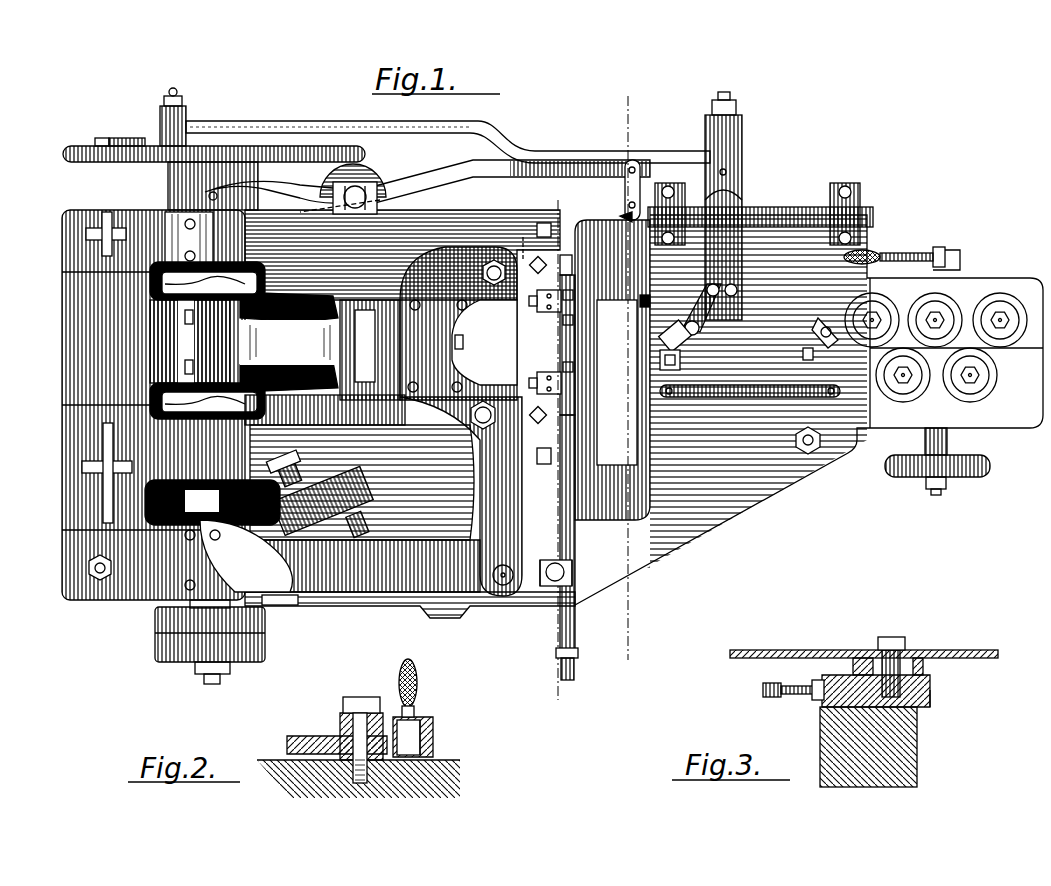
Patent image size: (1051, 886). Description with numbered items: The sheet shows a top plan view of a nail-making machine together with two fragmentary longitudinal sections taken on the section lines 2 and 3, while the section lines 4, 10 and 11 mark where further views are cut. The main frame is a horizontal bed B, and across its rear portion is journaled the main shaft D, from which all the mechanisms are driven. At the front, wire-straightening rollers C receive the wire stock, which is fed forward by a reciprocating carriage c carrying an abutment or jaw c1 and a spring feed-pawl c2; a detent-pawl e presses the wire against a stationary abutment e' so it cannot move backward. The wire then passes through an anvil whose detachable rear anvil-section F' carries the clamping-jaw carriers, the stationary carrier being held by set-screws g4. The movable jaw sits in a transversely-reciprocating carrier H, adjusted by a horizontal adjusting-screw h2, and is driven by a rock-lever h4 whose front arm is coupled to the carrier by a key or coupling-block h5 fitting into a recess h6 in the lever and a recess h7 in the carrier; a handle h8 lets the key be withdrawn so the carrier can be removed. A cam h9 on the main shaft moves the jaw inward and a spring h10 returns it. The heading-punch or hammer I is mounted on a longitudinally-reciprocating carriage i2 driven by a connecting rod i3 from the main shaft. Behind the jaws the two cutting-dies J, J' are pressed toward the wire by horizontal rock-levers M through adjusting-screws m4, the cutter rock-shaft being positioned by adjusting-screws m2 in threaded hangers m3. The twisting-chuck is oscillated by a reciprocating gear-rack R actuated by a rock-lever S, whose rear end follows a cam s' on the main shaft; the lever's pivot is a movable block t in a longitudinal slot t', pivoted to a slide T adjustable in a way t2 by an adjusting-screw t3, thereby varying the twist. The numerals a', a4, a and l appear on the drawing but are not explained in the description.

In FIG. 1, the rod a' is at (192, 152).
In FIG. 1, the post a4 is at (128, 136).
In FIG. 1, the lever arm a is at (448, 130).
In FIG. 1, the movable block t is at (356, 179).
In FIG. 3, the movable block t is at (902, 656).
In FIG. 1, the cam s' is at (251, 190).
In FIG. 1, the rock-lever S is at (655, 185).
In FIG. 3, the rock-lever S is at (864, 643).
In FIG. 1, the section line 3 is at (380, 200).
In FIG. 1, the plate l is at (322, 262).
In FIG. 1, the adjusting-screws m2 is at (207, 281).
In FIG. 1, the screw-threaded hangers m3 is at (207, 401).
In FIG. 1, the connecting rod i3 is at (289, 342).
In FIG. 1, the longitudinally-reciprocating carriage i2 is at (375, 410).
In FIG. 1, the horizontal rock-lever M is at (430, 272).
In FIG. 1, the heading-punch or hammer I is at (465, 343).
In FIG. 1, the section line 4 is at (500, 335).
In FIG. 1, the adjusting-screw m4 is at (542, 222).
In FIG. 1, the cutting-die J is at (549, 340).
In FIG. 1, the cutting-die J' is at (541, 372).
In FIG. 1, the set-screws g4 is at (575, 295).
In FIG. 1, the rear anvil-section F' is at (623, 370).
In FIG. 1, the reciprocating gear-rack R is at (625, 214).
In FIG. 1, the section line 10 is at (551, 449).
In FIG. 1, the section line 11 is at (620, 377).
In FIG. 1, the reciprocating carriage c is at (706, 286).
In FIG. 1, the abutment or jaw c1 is at (682, 364).
In FIG. 1, the spring feed-pawl c2 is at (682, 345).
In FIG. 1, the detent-pawl e is at (750, 354).
In FIG. 1, the stationary abutment or jaw e' is at (792, 363).
In FIG. 1, the wire-straightening rollers C is at (892, 312).
In FIG. 1, the horizontal bed B is at (809, 410).
In FIG. 2, the horizontal bed B is at (362, 784).
In FIG. 3, the horizontal bed B is at (868, 762).
In FIG. 1, the cam h9 is at (212, 502).
In FIG. 1, the spring h10 is at (290, 600).
In FIG. 1, the rock-lever h4 is at (362, 566).
In FIG. 2, the rock-lever h4 is at (295, 736).
In FIG. 1, the handle h8 is at (530, 608).
In FIG. 2, the handle h8 is at (418, 672).
In FIG. 1, the notch or recess h6 is at (543, 558).
In FIG. 2, the notch or recess h6 is at (383, 762).
In FIG. 1, the key or coupling-block h5 is at (575, 567).
In FIG. 2, the key or coupling-block h5 is at (408, 737).
In FIG. 1, the notch or recess h7 is at (578, 581).
In FIG. 2, the notch or recess h7 is at (433, 744).
In FIG. 1, the section line 2 is at (492, 577).
In FIG. 1, the transversely-reciprocating carrier H is at (578, 641).
In FIG. 2, the transversely-reciprocating carrier H is at (433, 720).
In FIG. 1, the horizontal adjusting-screw h2 is at (570, 678).
In FIG. 1, the main shaft D is at (160, 616).
In FIG. 3, the slide T is at (930, 692).
In FIG. 3, the longitudinal slot t' is at (886, 643).
In FIG. 3, the longitudinal way t2 is at (918, 710).
In FIG. 3, the adjusting-screw t3 is at (796, 699).